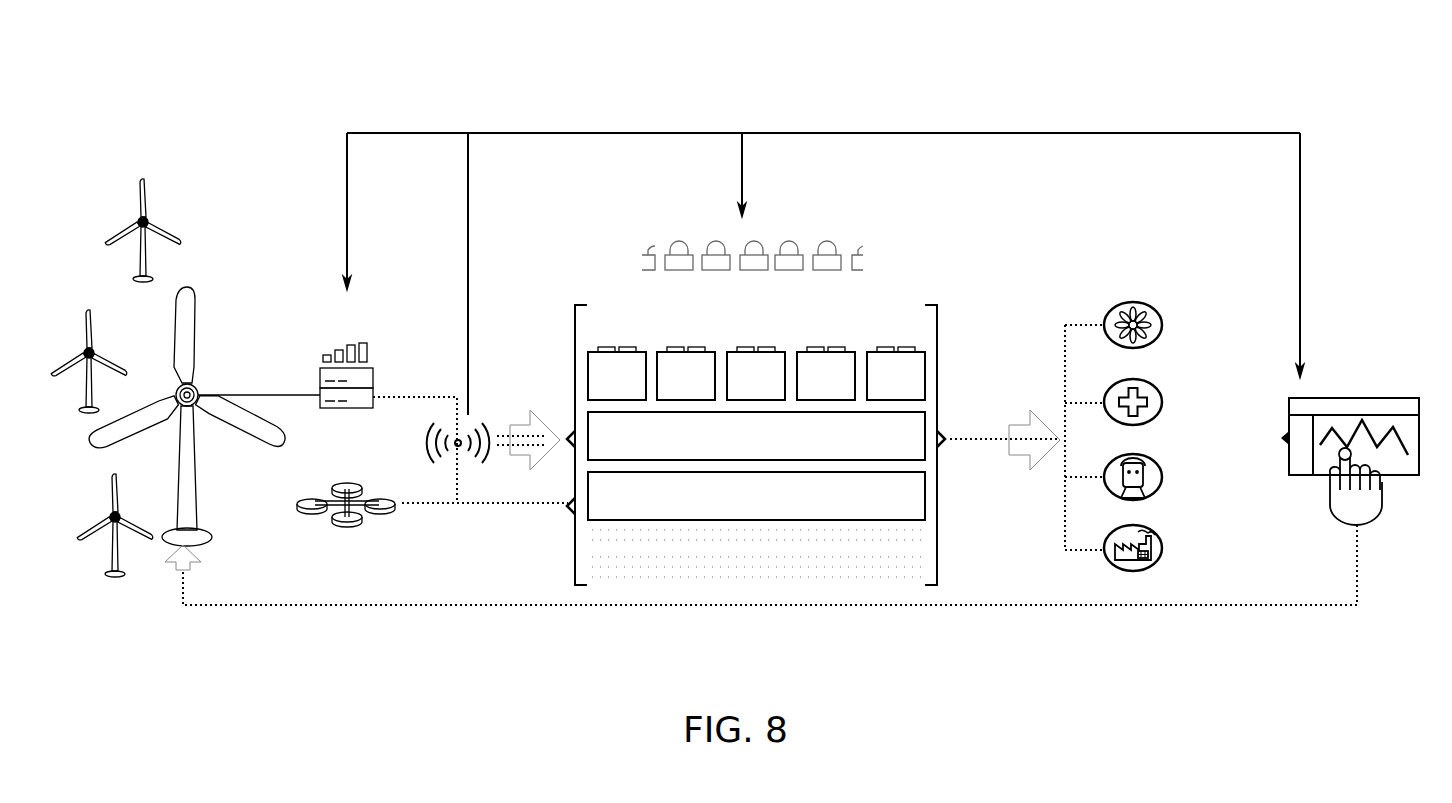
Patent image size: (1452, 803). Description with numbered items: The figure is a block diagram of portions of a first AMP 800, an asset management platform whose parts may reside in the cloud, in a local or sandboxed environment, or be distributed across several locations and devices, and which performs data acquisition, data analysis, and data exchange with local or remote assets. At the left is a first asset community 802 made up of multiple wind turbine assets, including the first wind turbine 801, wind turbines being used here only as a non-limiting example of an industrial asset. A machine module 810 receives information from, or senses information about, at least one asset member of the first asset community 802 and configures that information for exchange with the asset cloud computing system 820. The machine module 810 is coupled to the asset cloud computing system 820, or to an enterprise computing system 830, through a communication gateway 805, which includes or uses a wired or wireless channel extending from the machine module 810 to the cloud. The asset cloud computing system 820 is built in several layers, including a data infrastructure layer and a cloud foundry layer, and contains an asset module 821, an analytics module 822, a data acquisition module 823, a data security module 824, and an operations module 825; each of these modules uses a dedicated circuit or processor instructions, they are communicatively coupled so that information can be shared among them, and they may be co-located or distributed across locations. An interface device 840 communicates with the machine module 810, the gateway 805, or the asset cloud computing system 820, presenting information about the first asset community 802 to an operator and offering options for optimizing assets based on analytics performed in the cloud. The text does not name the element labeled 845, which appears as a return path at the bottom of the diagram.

The first AMP 800 is at (1023, 87).
The first wind turbine 801 is at (190, 346).
The first asset community 802 is at (278, 240).
The communication gateway 805 is at (488, 390).
The machine module 810 is at (362, 373).
The asset cloud computing system 820 is at (597, 273).
The asset module 821 is at (604, 347).
The analytics module 822 is at (670, 347).
The data acquisition module 823 is at (738, 347).
The data security module 824 is at (810, 347).
The operations module 825 is at (880, 347).
The enterprise computing system 830 is at (333, 533).
The interface device 840 is at (1324, 397).
The feedback path 845 is at (692, 607).